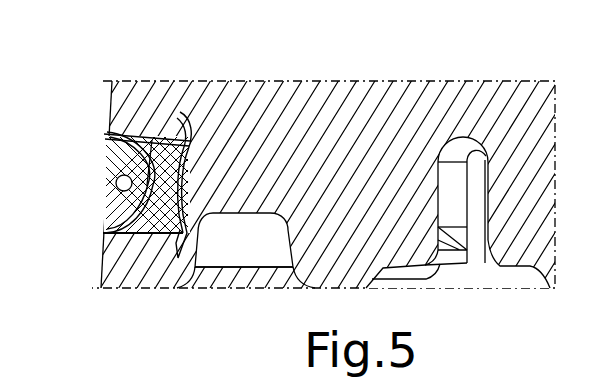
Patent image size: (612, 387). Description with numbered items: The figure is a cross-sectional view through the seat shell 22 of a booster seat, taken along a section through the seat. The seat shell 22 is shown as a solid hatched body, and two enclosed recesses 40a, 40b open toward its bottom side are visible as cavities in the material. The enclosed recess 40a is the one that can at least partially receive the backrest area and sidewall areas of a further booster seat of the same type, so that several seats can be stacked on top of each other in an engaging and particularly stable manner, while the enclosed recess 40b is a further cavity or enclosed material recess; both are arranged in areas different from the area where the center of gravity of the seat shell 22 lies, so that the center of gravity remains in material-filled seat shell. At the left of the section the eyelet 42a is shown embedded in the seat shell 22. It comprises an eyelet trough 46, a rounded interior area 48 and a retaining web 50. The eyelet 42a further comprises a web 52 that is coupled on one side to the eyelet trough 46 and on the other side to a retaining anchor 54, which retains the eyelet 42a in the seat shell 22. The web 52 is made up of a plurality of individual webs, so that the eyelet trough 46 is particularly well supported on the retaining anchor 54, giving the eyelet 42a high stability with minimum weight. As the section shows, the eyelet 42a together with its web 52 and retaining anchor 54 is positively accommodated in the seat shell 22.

The seat shell 22 is at (321, 100).
The enclosed recess 40a is at (240, 247).
The enclosed recess 40b is at (469, 273).
The eyelet 42a is at (99, 117).
The eyelet trough 46 is at (106, 136).
The rounded interior area 48 is at (152, 140).
The retaining web 50 is at (104, 178).
The web 52 is at (154, 233).
The retaining anchor 54 is at (197, 108).